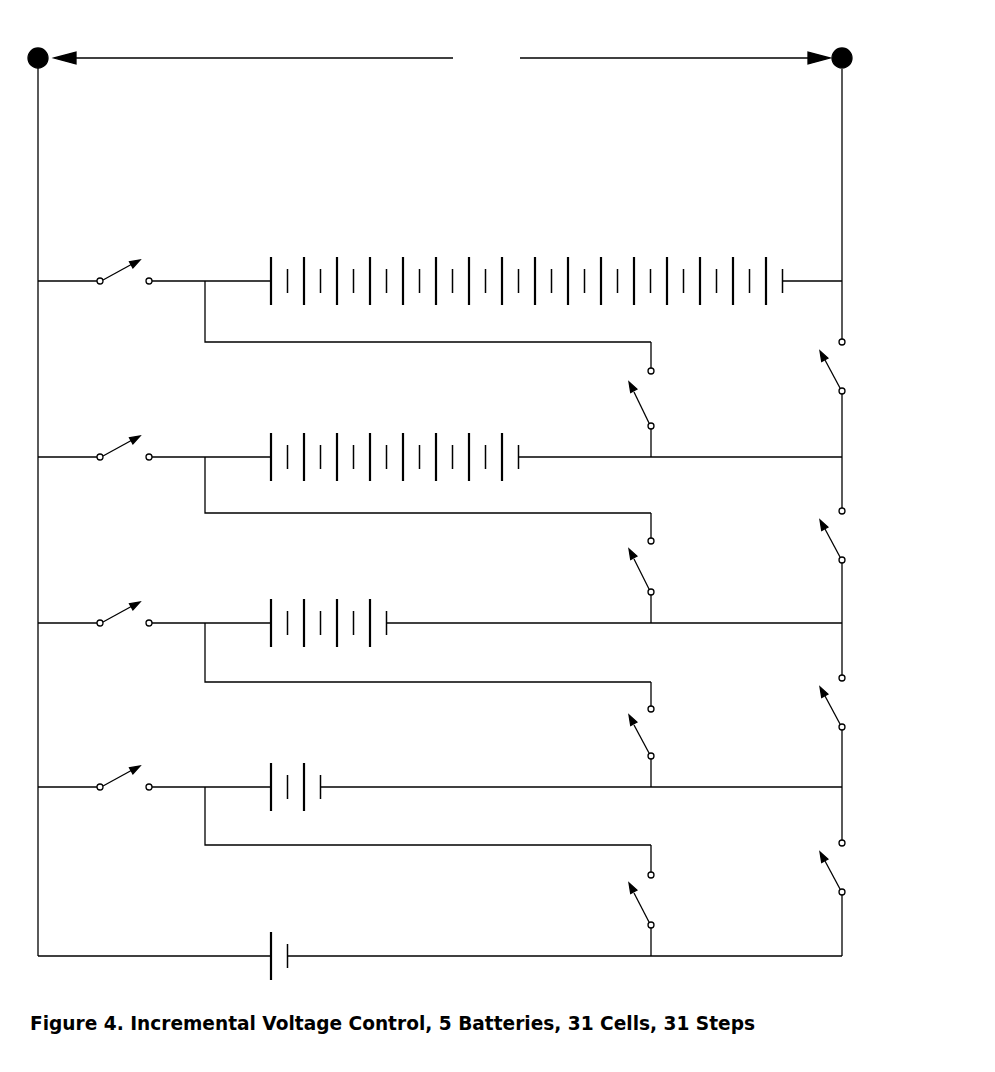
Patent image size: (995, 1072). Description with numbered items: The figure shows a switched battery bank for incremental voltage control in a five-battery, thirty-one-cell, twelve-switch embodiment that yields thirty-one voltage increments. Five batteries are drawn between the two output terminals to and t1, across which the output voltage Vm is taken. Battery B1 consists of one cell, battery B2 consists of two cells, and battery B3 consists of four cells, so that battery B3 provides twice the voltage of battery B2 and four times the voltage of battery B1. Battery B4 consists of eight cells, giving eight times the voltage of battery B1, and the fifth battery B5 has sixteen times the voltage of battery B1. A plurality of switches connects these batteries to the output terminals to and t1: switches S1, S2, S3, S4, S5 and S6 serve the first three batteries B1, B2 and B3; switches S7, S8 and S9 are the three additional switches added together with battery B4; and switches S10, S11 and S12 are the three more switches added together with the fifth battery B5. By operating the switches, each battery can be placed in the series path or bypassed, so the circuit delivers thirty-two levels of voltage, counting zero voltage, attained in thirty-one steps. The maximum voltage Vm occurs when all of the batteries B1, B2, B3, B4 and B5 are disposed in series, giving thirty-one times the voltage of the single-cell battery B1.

The output terminal to is at (39, 45).
The output terminal t1 is at (843, 45).
The output voltage Vm is at (442, 59).
The battery B1 is at (282, 937).
The battery B2 is at (293, 770).
The battery B3 is at (326, 604).
The battery B4 is at (392, 440).
The fifth battery B5 is at (524, 255).
The switch S1 is at (616, 900).
The switch S2 is at (863, 867).
The switch S3 is at (154, 810).
The switch S4 is at (618, 734).
The switch S5 is at (867, 702).
The switch S6 is at (154, 645).
The switch S7 is at (618, 568).
The switch S8 is at (867, 535).
The switch S9 is at (154, 479).
The switch S10 is at (610, 399).
The switch S11 is at (875, 366).
The switch S12 is at (154, 304).